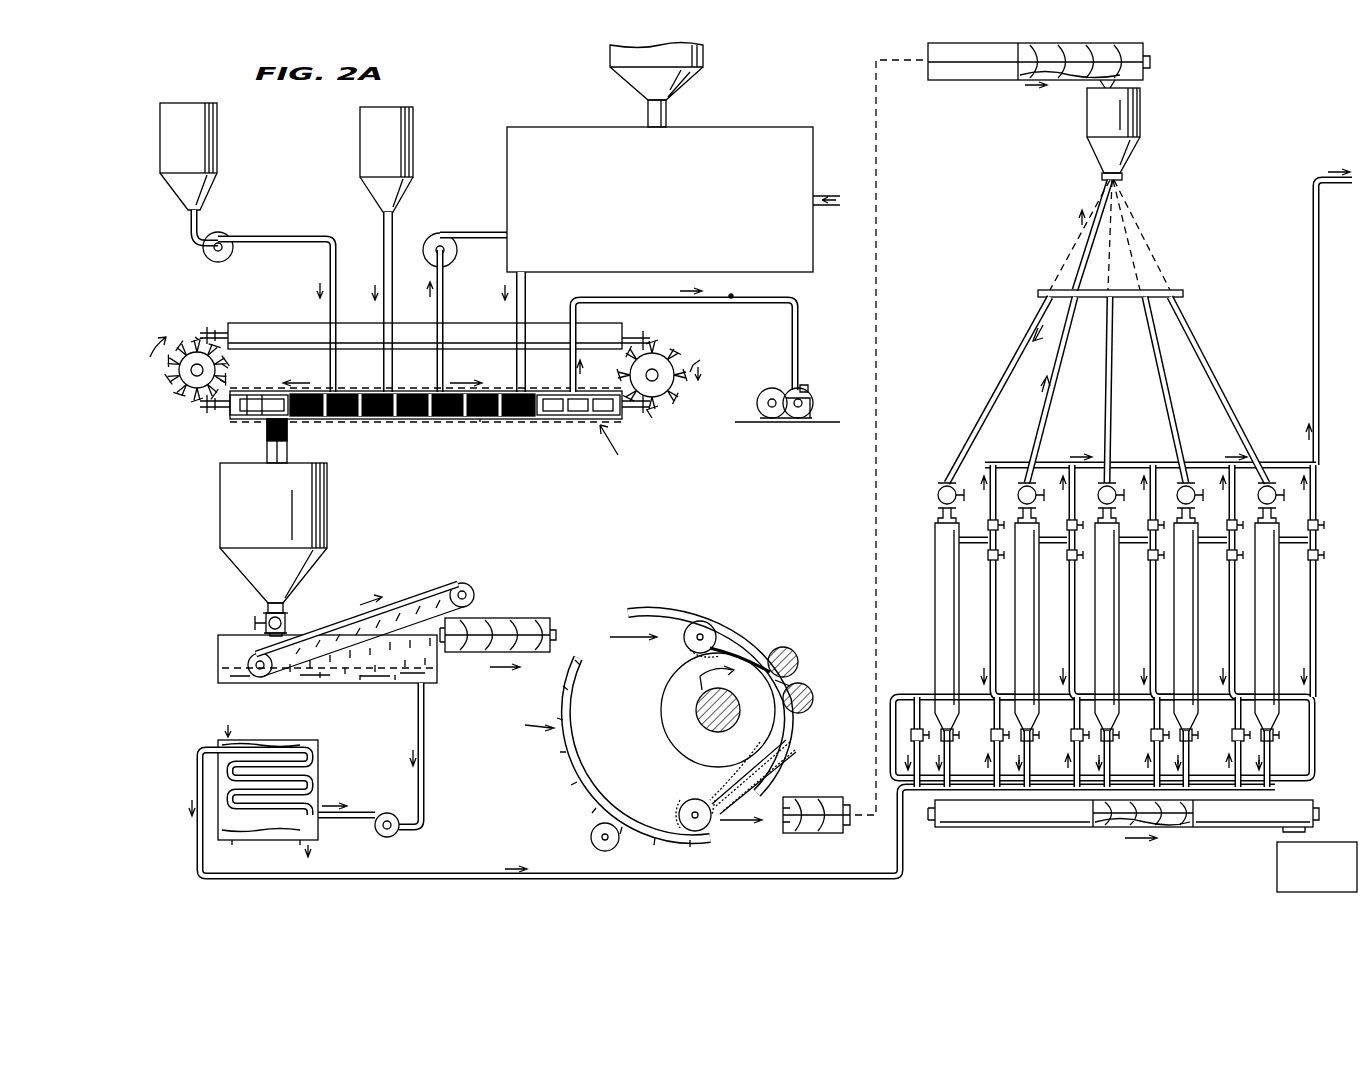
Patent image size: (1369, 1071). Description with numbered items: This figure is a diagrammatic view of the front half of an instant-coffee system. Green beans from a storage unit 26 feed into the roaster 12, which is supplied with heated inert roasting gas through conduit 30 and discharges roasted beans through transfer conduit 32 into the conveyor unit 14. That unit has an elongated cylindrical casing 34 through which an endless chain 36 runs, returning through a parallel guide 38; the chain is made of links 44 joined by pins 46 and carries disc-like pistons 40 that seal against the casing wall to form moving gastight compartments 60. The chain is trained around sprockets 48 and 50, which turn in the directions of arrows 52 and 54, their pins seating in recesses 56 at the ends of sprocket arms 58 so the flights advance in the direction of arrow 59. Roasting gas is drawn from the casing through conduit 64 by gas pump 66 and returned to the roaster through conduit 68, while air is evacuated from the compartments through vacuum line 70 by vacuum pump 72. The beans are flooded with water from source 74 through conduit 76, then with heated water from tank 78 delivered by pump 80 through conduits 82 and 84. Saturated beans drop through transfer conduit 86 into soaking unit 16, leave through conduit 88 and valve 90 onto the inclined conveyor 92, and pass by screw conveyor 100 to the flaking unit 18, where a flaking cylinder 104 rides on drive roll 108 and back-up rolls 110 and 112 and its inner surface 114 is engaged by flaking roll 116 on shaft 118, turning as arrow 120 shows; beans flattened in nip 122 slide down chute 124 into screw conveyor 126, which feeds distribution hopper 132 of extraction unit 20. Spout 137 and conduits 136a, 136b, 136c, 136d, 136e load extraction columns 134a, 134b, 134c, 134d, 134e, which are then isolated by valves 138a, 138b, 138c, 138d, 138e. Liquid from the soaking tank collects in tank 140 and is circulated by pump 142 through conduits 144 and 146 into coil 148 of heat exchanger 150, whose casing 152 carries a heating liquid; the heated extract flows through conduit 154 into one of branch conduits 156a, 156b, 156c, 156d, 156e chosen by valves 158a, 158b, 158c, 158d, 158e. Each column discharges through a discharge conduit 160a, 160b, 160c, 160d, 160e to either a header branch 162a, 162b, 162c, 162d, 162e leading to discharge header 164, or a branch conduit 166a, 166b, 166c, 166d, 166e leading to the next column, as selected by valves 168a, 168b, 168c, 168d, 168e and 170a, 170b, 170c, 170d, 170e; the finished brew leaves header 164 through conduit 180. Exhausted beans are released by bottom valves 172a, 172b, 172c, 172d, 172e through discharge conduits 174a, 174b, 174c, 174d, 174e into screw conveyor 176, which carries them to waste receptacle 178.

The roaster 12 is at (568, 127).
The unit 14 is at (619, 448).
The soaking unit 16 is at (338, 476).
The flaking or rolling unit 18 is at (531, 724).
The extraction unit 20 is at (936, 433).
The hopper, bin, or other storage unit 26 is at (610, 58).
The conduit 30 is at (826, 189).
The transfer conduit 32 is at (527, 306).
The casing 34 is at (367, 393).
The endless, flexible chain 36 is at (216, 412).
The guide 38 is at (276, 325).
The pistons 40 is at (586, 420).
The links 44 is at (668, 408).
The pivot or hinge pins 46 is at (650, 412).
The sprocket 48 is at (180, 378).
The sprocket 50 is at (630, 376).
The arrow 52 is at (147, 354).
The arrow 54 is at (709, 362).
The recesses 56 is at (229, 368).
The sprocket arms 58 is at (224, 379).
The arrow 59 is at (296, 395).
The compartments 60 is at (500, 423).
The conduit 64 is at (444, 280).
The blower or gas pump 66 is at (436, 234).
The conduit 68 is at (494, 233).
The vacuum line 70 is at (740, 304).
The vacuum pump 72 is at (772, 388).
The storage tank or other source 74 is at (360, 118).
The conduit 76 is at (384, 256).
The tank or other source 78 is at (161, 116).
The pump 80 is at (230, 262).
The conduit 82 is at (188, 224).
The conduit 84 is at (329, 272).
The transfer conduit 86 is at (267, 441).
The conduit 88 is at (266, 603).
The valve 90 is at (285, 616).
The inclined, endless conveyor 92 is at (346, 604).
The screw conveyor 100 is at (468, 662).
The flaking cylinder 104 is at (557, 759).
The drive roll 108 is at (591, 838).
The back-up roll 110 is at (778, 650).
The back-up roll 112 is at (806, 706).
The inner surface 114 is at (565, 713).
The press or flaking roll 116 is at (661, 708).
The shaft 118 is at (732, 698).
The arrow 120 is at (703, 684).
The nip 122 is at (790, 687).
The chute 124 is at (742, 782).
The screw conveyor 126 is at (809, 847).
The distribution hopper 132 is at (1128, 118).
The extraction column 134a is at (935, 622).
The extraction column 134b is at (1017, 603).
The extraction column 134c is at (1097, 603).
The extraction column 134d is at (1176, 603).
The extraction column 134e is at (1257, 603).
The conduit 136a is at (994, 410).
The conduit 136b is at (1058, 400).
The conduit 136c is at (1112, 400).
The conduit 136d is at (1165, 400).
The conduit 136e is at (1226, 400).
The spout 137 is at (1082, 256).
The valve 138a is at (940, 488).
The valve 138b is at (1034, 485).
The valve 138c is at (1113, 485).
The valve 138d is at (1190, 485).
The valve 138e is at (1272, 485).
The collection tank 140 is at (218, 658).
The pump 142 is at (390, 813).
The conduit 144 is at (418, 708).
The conduit 146 is at (327, 822).
The coil 148 is at (290, 745).
The shell and tube heat exchanger 150 is at (327, 748).
The casing 152 is at (253, 845).
The conduit 154 is at (413, 878).
The branch conduit 156a is at (893, 746).
The branch conduit 156b is at (993, 752).
The branch conduit 156c is at (1073, 752).
The branch conduit 156d is at (1153, 752).
The branch conduit 156e is at (1234, 752).
The valve 158a is at (911, 731).
The valve 158b is at (991, 731).
The valve 158c is at (1071, 731).
The valve 158d is at (1151, 731).
The valve 158e is at (1232, 731).
The discharge conduit 160a is at (977, 554).
The discharge conduit 160b is at (1057, 554).
The discharge conduit 160c is at (1137, 554).
The discharge conduit 160d is at (1217, 554).
The discharge conduit 160e is at (1297, 554).
The branch conduit 162a is at (1010, 492).
The branch conduit 162b is at (1088, 492).
The branch conduit 162c is at (1167, 492).
The branch conduit 162d is at (1247, 492).
The branch conduit 162e is at (1315, 482).
The discharge header 164 is at (1013, 462).
The branch conduit 166a is at (993, 662).
The branch conduit 166b is at (1073, 662).
The branch conduit 166c is at (1153, 662).
The branch conduit 166d is at (1233, 662).
The branch conduit 166e is at (1313, 662).
The valve 168a is at (988, 526).
The valve 168b is at (1067, 526).
The valve 168c is at (1148, 527).
The valve 168d is at (1227, 527).
The valve 168e is at (1308, 527).
The valve 170a is at (995, 565).
The valve 170b is at (1075, 565).
The valve 170c is at (1155, 565).
The valve 170d is at (1234, 565).
The valve 170e is at (1314, 565).
The valve 172a is at (953, 736).
The valve 172b is at (1033, 736).
The valve 172c is at (1113, 736).
The valve 172d is at (1192, 736).
The valve 172e is at (1273, 736).
The discharge conduit 174a is at (947, 768).
The discharge conduit 174b is at (1027, 768).
The discharge conduit 174c is at (1107, 768).
The discharge conduit 174d is at (1186, 768).
The discharge conduit 174e is at (1267, 768).
The screw conveyor 176 is at (999, 843).
The waste receptacle 178 is at (1277, 862).
The conduit 180 is at (1331, 186).